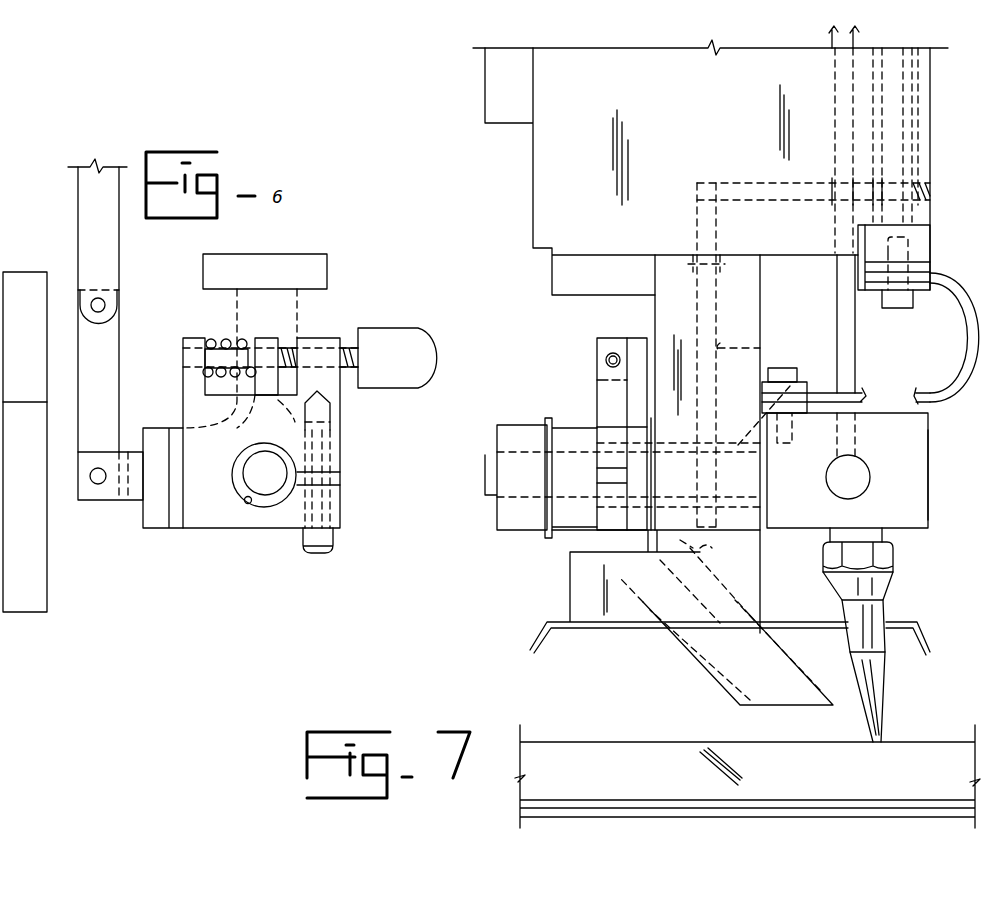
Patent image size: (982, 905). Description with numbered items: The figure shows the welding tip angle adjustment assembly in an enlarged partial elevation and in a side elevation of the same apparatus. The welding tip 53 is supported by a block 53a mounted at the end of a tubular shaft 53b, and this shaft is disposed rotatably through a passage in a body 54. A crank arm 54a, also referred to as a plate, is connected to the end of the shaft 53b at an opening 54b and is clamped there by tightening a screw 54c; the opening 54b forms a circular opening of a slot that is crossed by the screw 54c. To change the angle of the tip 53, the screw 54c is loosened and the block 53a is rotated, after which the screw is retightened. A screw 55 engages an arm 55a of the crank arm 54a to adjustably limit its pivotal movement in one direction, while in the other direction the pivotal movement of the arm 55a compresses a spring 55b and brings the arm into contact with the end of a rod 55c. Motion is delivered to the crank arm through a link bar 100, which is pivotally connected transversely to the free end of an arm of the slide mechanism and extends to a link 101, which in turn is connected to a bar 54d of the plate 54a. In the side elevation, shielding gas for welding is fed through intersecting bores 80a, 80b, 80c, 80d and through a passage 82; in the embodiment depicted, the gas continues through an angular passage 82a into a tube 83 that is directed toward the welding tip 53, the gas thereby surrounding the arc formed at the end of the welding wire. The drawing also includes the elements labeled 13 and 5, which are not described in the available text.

In FIG. 6, the link bar 100 is at (120, 244).
In FIG. 6, the link 101 is at (120, 336).
In FIG. 6, the body 54 is at (297, 312).
In FIG. 7, the body 54 is at (762, 311).
In FIG. 6, the crank arm 54a is at (195, 530).
In FIG. 7, the crank arm 54a is at (600, 360).
In FIG. 6, the opening 54b is at (248, 505).
In FIG. 6, the screw 54c is at (338, 548).
In FIG. 6, the bar 54d is at (125, 503).
In FIG. 6, the screw 55 is at (400, 328).
In FIG. 6, the arm 55a is at (266, 337).
In FIG. 6, the spring 55b is at (225, 338).
In FIG. 6, the rod 55c is at (223, 376).
In FIG. 7, the welding tip 53 is at (870, 676).
In FIG. 7, the block 53a is at (883, 413).
In FIG. 6, the tubular shaft 53b is at (270, 510).
In FIG. 7, the tubular shaft 53b is at (790, 386).
In FIG. 7, the bore 80a is at (912, 118).
In FIG. 7, the bore 80b is at (787, 183).
In FIG. 7, the bore 80c is at (697, 186).
In FIG. 7, the bore 80d is at (697, 233).
In FIG. 7, the passage 82 is at (768, 203).
In FIG. 7, the angular passage 82a is at (687, 581).
In FIG. 7, the tube 83 is at (705, 660).
In FIG. 7, the workpiece 13 is at (630, 742).
In FIG. 7, the frame 5 is at (928, 497).